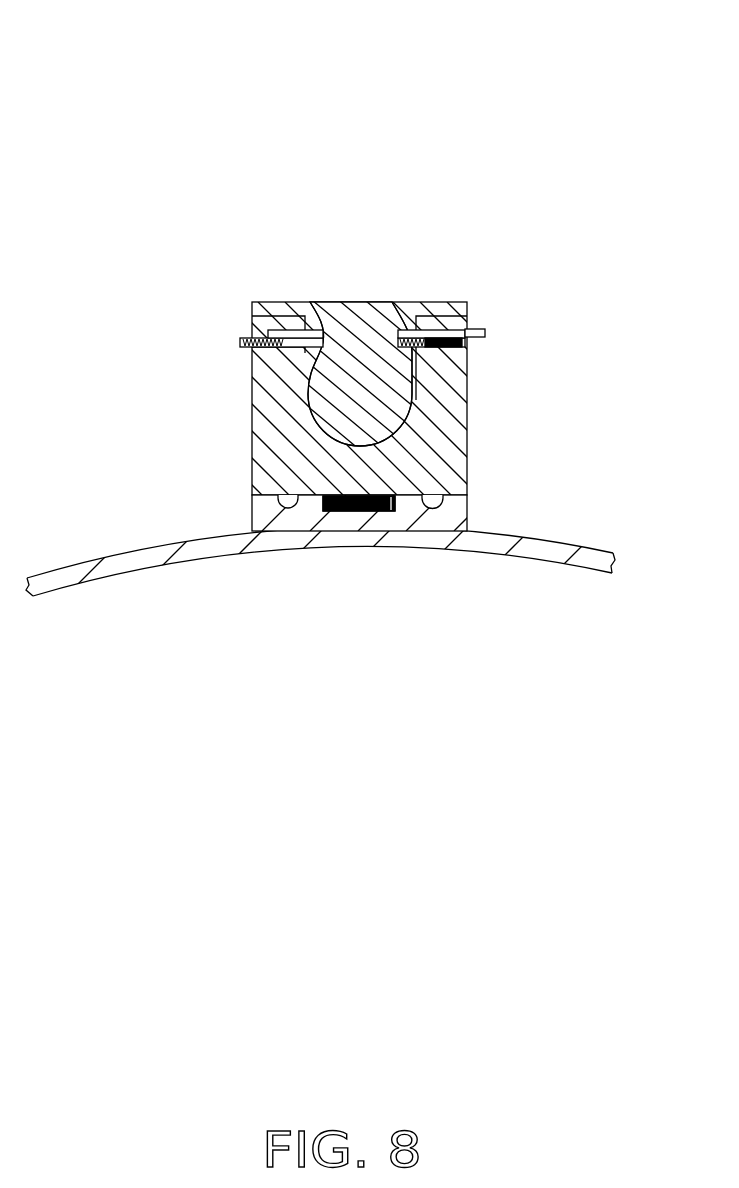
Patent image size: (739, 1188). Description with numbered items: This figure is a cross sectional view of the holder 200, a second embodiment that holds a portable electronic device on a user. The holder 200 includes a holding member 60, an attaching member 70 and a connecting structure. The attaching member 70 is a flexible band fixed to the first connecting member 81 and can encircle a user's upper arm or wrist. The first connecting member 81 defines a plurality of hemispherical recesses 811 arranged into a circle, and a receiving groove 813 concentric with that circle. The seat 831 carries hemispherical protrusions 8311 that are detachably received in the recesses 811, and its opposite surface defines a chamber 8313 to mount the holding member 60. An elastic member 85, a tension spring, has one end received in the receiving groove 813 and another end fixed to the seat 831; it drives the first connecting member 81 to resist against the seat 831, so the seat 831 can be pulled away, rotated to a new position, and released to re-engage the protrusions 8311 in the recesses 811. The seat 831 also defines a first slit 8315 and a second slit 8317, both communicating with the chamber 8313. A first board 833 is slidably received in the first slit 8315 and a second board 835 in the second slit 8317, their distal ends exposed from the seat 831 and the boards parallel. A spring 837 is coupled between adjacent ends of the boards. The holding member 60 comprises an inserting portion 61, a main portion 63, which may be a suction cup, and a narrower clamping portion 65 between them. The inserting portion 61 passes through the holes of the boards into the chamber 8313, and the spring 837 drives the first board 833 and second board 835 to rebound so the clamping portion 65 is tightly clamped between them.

The holder 200 is at (428, 50).
The holding member 60 is at (361, 351).
The inserting portion 61 is at (358, 408).
The main portion 63 is at (286, 306).
The clamping portion 65 is at (396, 335).
The attaching member 70 is at (200, 543).
The first connecting member 81 is at (352, 607).
The recesses 811 is at (437, 507).
The receiving groove 813 is at (390, 512).
The seat 831 is at (450, 405).
The protrusions 8311 is at (283, 492).
The chamber 8313 is at (303, 390).
The first slit 8315 is at (468, 332).
The second slit 8317 is at (283, 355).
The first board 833 is at (480, 333).
The second board 835 is at (240, 343).
The spring 837 is at (467, 346).
The elastic member 85 is at (395, 497).